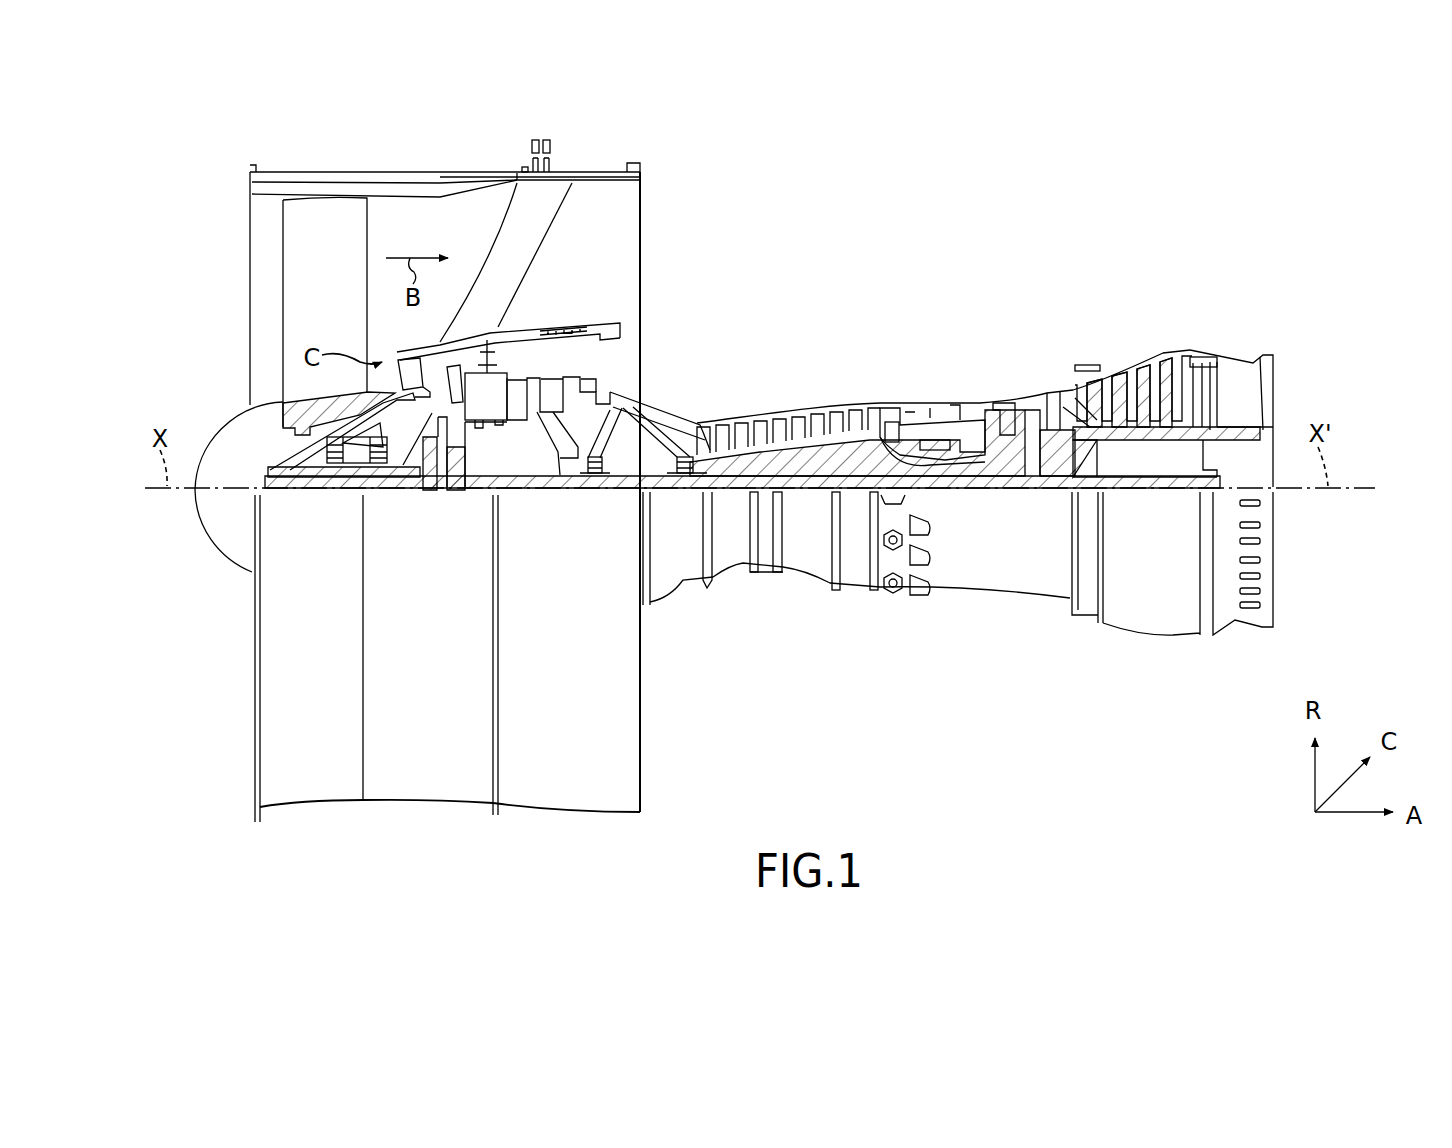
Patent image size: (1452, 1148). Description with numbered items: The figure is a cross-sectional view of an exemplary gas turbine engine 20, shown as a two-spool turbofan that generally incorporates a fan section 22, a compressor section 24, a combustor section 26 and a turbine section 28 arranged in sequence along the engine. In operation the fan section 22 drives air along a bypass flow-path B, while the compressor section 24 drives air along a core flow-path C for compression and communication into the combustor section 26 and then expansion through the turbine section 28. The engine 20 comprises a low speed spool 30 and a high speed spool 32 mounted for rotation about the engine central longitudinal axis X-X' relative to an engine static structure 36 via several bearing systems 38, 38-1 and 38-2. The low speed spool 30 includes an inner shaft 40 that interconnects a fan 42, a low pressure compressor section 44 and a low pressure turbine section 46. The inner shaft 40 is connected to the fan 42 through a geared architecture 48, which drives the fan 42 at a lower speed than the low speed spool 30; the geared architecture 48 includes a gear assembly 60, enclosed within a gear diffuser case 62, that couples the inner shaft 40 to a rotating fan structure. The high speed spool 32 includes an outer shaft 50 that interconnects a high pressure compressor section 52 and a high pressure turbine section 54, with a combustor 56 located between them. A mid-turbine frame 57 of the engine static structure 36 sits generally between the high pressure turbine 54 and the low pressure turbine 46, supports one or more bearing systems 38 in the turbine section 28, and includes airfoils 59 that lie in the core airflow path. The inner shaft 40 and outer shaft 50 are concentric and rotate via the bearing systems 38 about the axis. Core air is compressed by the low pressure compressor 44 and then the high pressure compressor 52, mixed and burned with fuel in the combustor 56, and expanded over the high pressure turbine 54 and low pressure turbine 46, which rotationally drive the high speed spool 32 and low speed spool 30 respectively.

The gas turbine engine 20 is at (990, 208).
The fan section 22 is at (490, 152).
The compressor section 24 is at (500, 283).
The combustor section 26 is at (985, 283).
The turbine section 28 is at (1205, 283).
The low speed spool 30 is at (812, 494).
The high speed spool 32 is at (850, 455).
The engine static structure 36 is at (245, 812).
The bearing system 38 is at (1040, 472).
The bearing system 38-1 is at (335, 470).
The bearing system 38-2 is at (594, 480).
The inner shaft 40 is at (663, 492).
The fan 42 is at (325, 312).
The low pressure compressor section 44 is at (575, 383).
The low pressure turbine section 46 is at (1135, 378).
The geared architecture 48 is at (460, 508).
The outer shaft 50 is at (968, 472).
The high pressure compressor section 52 is at (803, 425).
The high pressure turbine section 54 is at (1003, 407).
The combustor 56 is at (940, 425).
The mid-turbine frame 57 is at (1052, 440).
The airfoils 59 is at (1067, 430).
The gear assembly 60 is at (470, 472).
The gear diffuser case 62 is at (455, 433).